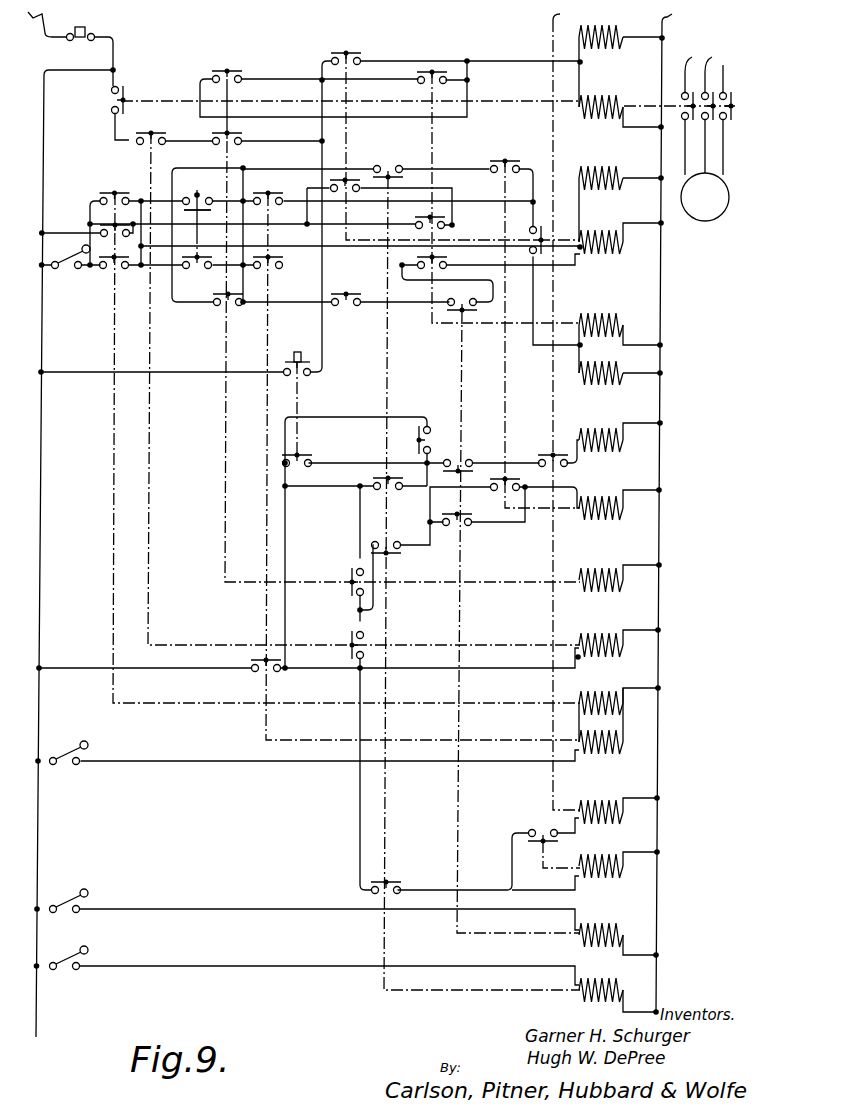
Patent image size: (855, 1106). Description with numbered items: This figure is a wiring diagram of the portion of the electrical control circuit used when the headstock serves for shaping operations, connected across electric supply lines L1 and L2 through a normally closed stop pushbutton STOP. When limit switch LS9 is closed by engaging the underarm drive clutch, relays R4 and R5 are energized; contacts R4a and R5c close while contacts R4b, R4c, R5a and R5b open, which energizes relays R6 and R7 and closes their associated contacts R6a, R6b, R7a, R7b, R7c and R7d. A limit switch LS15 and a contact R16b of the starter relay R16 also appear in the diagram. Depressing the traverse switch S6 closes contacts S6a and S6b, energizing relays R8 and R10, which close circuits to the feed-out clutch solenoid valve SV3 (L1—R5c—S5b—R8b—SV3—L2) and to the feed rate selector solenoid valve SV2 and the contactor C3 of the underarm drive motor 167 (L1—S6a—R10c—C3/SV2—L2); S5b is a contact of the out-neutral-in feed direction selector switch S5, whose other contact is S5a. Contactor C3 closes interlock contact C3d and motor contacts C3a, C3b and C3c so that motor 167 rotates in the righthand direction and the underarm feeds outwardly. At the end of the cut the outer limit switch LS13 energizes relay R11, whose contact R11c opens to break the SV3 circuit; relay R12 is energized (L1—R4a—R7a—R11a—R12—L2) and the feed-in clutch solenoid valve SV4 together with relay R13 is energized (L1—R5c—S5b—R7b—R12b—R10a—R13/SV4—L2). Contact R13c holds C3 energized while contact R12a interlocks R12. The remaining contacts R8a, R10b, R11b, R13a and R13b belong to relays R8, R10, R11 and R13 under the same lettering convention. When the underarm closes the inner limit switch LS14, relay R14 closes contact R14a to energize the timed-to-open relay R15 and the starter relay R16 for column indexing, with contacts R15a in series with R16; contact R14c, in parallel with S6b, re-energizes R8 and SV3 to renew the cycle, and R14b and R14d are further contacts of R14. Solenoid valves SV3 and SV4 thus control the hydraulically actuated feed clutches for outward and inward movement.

The electric supply line L1 is at (35, 23).
The electric supply line L2 is at (626, 21).
The stop push button STOP is at (80, 27).
The interlock contact C3d is at (122, 92).
The motor contact C3a is at (692, 107).
The motor contact C3b is at (713, 62).
The motor contact C3c is at (730, 96).
The contactor C3 is at (595, 97).
The traverse motor 167 is at (700, 221).
The relay contact R6b is at (168, 120).
The relay contact R7d is at (232, 70).
The relay contact R7c is at (243, 133).
The relay contact R10c is at (362, 52).
The relay contact R13c is at (442, 72).
The feed rate selector solenoid valve SV2 is at (598, 48).
The feed-out clutch solenoid valve SV3 is at (600, 170).
The feed-in clutch solenoid valve SV4 is at (590, 386).
The relay contact R5c is at (120, 190).
The relay contact R5b is at (103, 233).
The relay contact R5a is at (122, 270).
The limit switch LS15 is at (68, 264).
The spindle feed direction selector switch S5 is at (212, 194).
The switch S5 contact a S5a is at (212, 211).
The selector switch contact S5b is at (202, 267).
The relay contact R4c is at (264, 194).
The relay contact R4b is at (275, 265).
The relay contact R4a is at (252, 660).
The relay contact R7b is at (225, 305).
The relay contact R7a is at (350, 588).
The relay R10 contact b R10b is at (350, 180).
The relay contact R10a is at (530, 237).
The relay R14 contact d R14d is at (394, 166).
The relay contact R14c is at (380, 478).
The relay R14 contact b R14b is at (390, 554).
The relay contact R14a is at (390, 880).
The relay contact R12b is at (515, 162).
The interlock contact R12a is at (507, 480).
The relay R13 contact b R13b is at (440, 217).
The relay R13 contact a R13a is at (435, 262).
The relay contact R8b is at (348, 294).
The relay R8 contact a R8a is at (435, 436).
The relay contact R11c is at (462, 312).
The relay R11 contact b R11b is at (458, 466).
The relay contact R11a is at (458, 514).
The relay R10 is at (598, 258).
The relay R13 is at (596, 312).
The relay R8 is at (600, 452).
The relay R12 is at (597, 520).
The relay R7 is at (596, 570).
The relay R6 is at (598, 634).
The relay R5 is at (598, 692).
The relay R4 is at (592, 754).
The starter relay R16 is at (596, 800).
The timed-to-open relay R15 is at (596, 856).
The relay R11 is at (596, 920).
The relay R14 is at (596, 976).
The relay R16 contact b R16b is at (560, 468).
The timer relay contacts R15a is at (538, 826).
The relay R6 contact a R6a is at (350, 642).
The traverse switch S6 is at (288, 362).
The switch contact S6a is at (300, 375).
The switch contact S6b is at (304, 456).
The limit switch LS9 is at (96, 744).
The outer limit switch LS13 is at (78, 892).
The inner limit switch LS14 is at (80, 948).